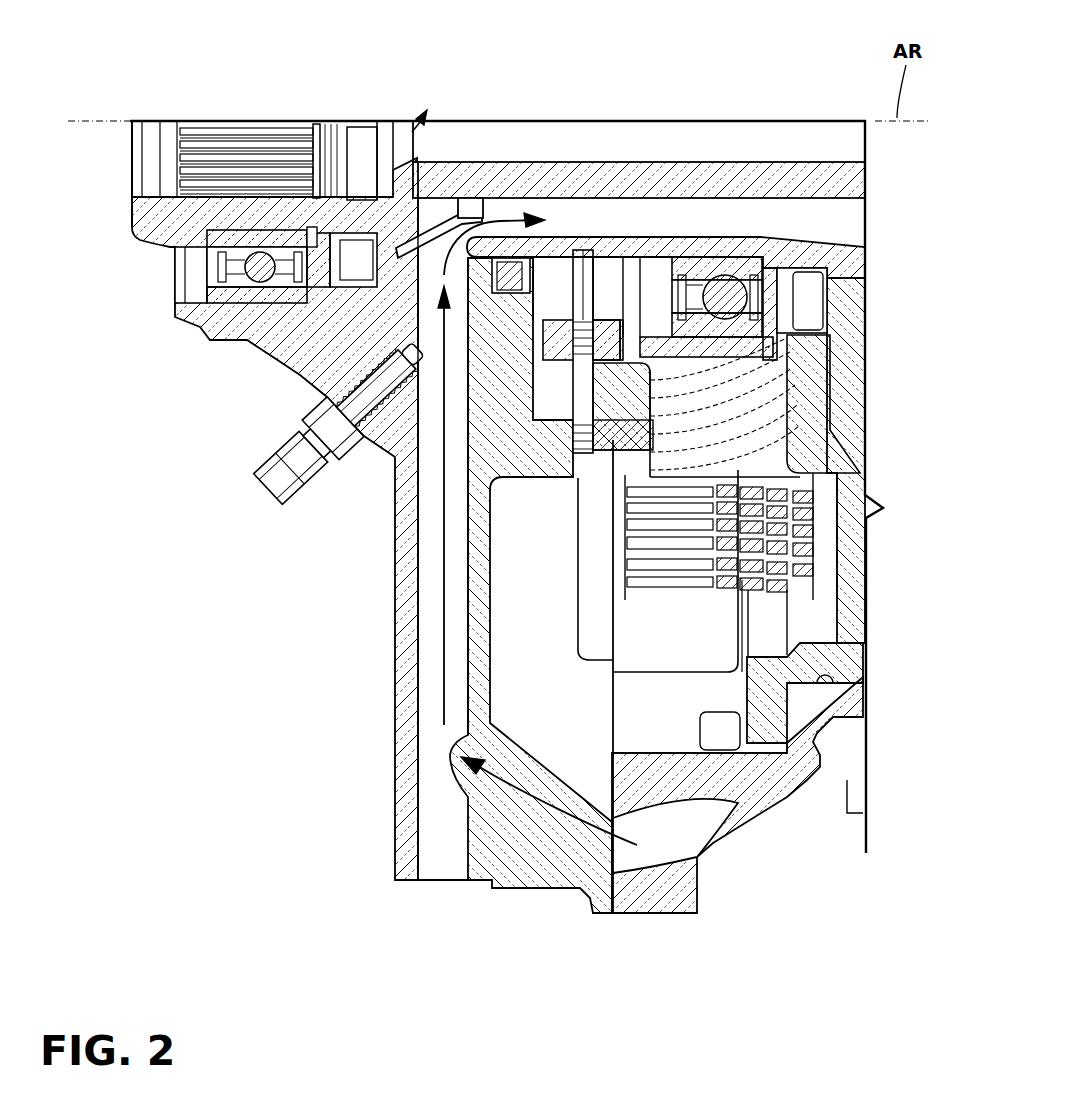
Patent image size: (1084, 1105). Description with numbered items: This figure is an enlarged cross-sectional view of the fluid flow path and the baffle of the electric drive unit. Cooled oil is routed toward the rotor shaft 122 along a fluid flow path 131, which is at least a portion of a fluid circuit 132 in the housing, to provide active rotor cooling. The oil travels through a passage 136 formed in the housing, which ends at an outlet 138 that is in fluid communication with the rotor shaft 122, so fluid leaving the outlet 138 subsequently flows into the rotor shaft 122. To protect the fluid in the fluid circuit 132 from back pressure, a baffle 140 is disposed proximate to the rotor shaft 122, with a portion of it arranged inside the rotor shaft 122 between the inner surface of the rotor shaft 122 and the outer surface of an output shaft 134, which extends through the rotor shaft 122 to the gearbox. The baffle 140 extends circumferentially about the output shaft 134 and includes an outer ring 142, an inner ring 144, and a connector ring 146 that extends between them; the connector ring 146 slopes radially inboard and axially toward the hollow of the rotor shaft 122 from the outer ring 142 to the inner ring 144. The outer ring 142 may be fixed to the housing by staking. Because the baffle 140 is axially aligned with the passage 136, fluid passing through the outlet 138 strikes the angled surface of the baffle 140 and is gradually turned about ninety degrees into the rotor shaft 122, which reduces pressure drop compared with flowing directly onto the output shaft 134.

The rotor shaft 122 is at (850, 258).
The fluid flow path 131 is at (433, 650).
The fluid circuit 132 is at (443, 570).
The output shaft 134 is at (676, 178).
The passage 136 is at (400, 517).
The outlet 138 is at (345, 352).
The baffle 140 is at (433, 215).
The outer ring 142 is at (400, 325).
The inner ring 144 is at (485, 200).
The connector ring 146 is at (443, 217).